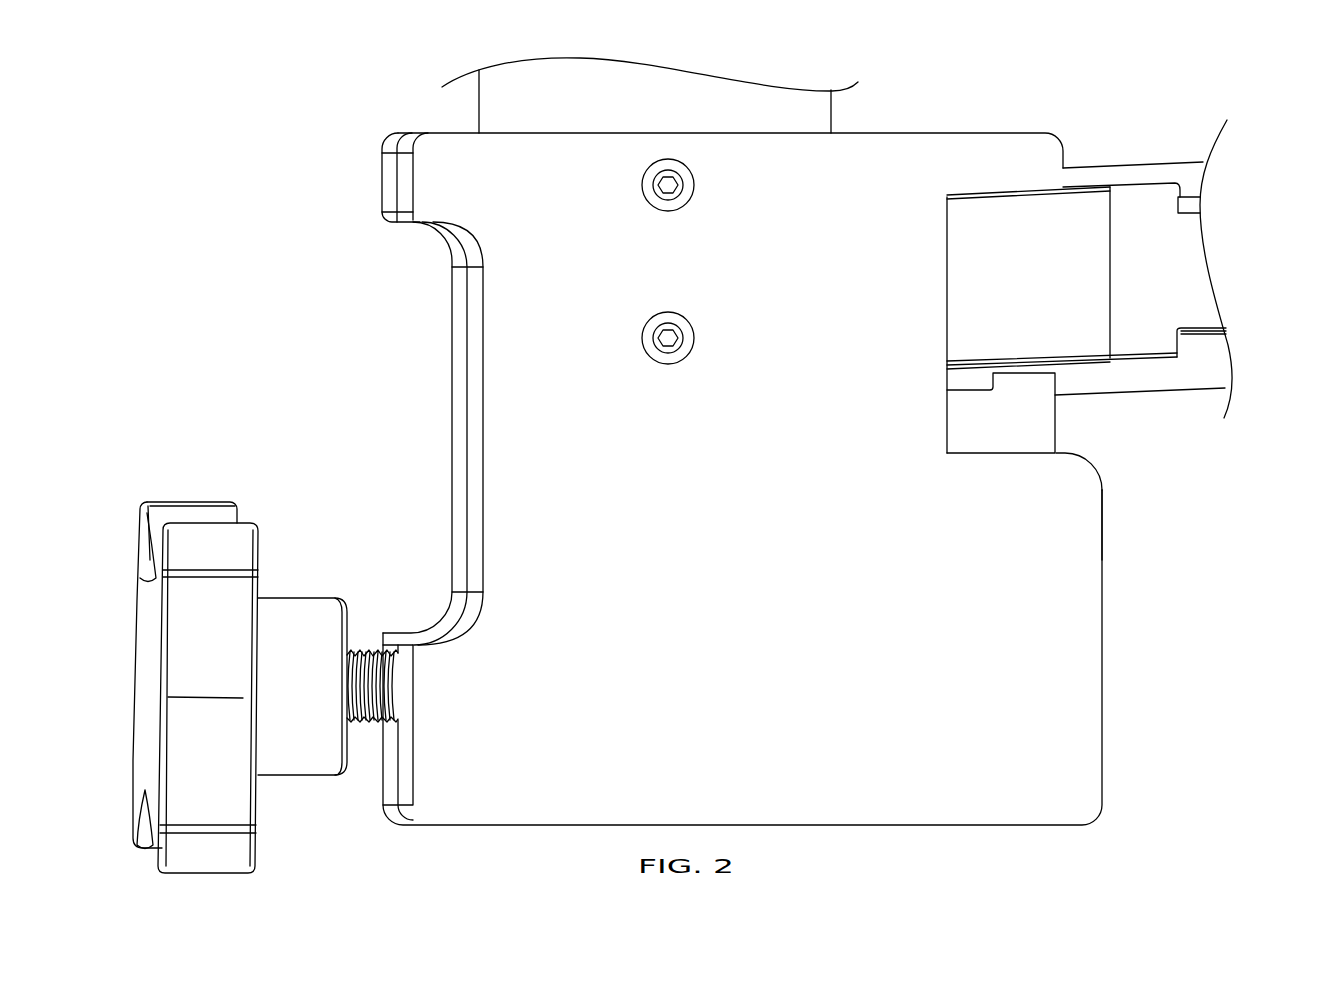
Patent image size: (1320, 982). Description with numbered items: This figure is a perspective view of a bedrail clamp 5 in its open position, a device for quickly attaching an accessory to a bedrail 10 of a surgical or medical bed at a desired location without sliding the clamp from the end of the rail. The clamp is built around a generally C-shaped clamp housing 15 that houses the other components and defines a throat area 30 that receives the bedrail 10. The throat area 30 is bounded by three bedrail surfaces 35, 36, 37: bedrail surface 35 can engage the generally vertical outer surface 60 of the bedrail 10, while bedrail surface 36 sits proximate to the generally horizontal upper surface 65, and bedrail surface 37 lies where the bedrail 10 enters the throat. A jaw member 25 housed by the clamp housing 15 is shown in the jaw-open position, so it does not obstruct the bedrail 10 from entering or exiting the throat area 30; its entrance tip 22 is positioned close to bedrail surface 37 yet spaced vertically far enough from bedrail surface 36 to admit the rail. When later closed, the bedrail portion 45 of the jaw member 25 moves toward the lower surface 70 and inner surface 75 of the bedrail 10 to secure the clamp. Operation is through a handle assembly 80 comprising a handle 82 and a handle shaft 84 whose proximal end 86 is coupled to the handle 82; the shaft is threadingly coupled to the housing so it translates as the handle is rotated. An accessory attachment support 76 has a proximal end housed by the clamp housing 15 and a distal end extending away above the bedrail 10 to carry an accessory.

The bedrail clamp 5 is at (386, 358).
The bedrail 10 is at (1166, 278).
The clamp housing 15 is at (458, 460).
The entrance tip 22 is at (1030, 372).
The jaw member 25 is at (1056, 435).
The throat area 30 is at (1019, 298).
The bedrail surface 35 is at (948, 248).
The bedrail surface 36 is at (965, 196).
The bedrail surface 37 is at (1065, 447).
The bedrail portion 45 is at (960, 390).
The outer surface 60 is at (1010, 288).
The upper surface 65 is at (1130, 188).
The lower surface 70 is at (1122, 363).
The inner surface 75 is at (1181, 197).
The accessory attachment support 76 is at (833, 112).
The handle assembly 80 is at (265, 647).
The handle 82 is at (183, 500).
The handle shaft 84 is at (368, 725).
The proximal end 86 is at (352, 660).